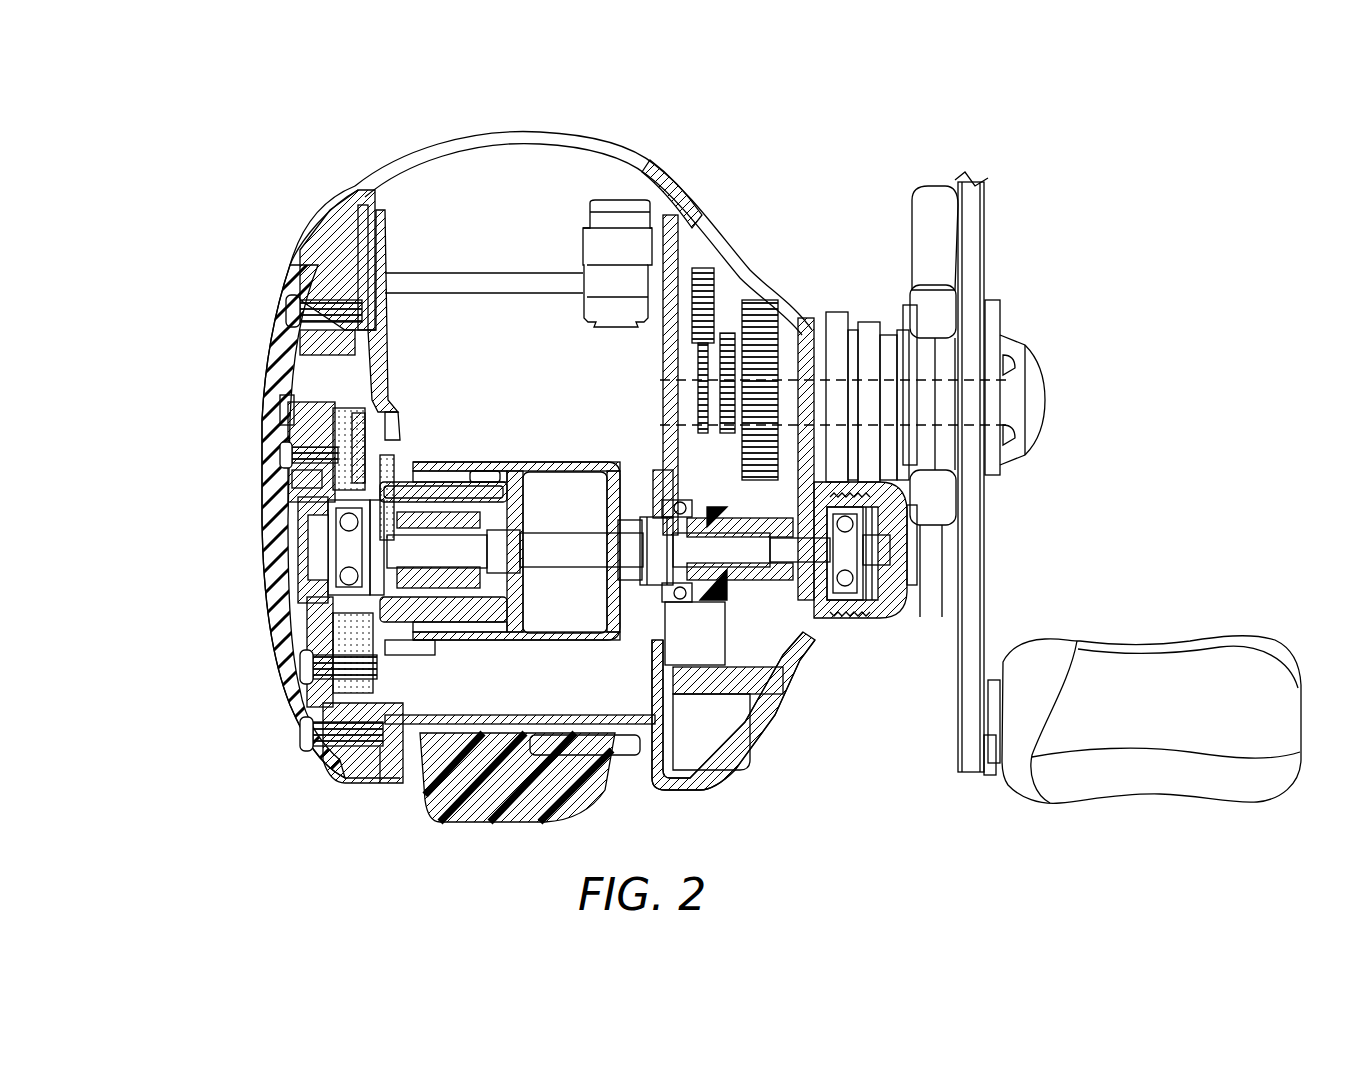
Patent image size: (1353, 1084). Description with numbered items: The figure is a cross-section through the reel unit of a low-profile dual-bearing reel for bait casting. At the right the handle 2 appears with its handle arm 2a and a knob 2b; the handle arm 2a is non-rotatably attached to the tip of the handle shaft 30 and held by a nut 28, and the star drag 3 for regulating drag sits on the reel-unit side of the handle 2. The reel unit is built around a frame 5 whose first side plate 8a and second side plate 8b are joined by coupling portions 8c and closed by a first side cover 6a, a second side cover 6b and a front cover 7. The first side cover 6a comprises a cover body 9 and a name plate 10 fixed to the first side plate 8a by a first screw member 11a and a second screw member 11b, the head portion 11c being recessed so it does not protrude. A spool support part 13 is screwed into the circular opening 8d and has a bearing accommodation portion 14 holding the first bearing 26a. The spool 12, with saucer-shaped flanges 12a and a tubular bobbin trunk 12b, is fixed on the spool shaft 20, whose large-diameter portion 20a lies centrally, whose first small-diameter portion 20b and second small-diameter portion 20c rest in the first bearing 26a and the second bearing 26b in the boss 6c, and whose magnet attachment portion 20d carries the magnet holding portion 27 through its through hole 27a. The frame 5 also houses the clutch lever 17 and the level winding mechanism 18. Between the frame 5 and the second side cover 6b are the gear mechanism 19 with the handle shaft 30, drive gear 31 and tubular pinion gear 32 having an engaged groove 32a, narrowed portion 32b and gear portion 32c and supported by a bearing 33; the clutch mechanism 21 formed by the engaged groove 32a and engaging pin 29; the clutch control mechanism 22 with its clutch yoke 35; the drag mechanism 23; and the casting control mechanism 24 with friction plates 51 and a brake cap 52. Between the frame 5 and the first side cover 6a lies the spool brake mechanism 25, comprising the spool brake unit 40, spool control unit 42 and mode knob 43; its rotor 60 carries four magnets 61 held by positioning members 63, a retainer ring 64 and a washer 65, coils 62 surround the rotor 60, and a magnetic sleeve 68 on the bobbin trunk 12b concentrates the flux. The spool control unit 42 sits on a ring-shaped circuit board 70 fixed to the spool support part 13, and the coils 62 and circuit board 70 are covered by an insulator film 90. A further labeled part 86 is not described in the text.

The handle 2 is at (1037, 283).
The handle arm 2a is at (975, 257).
The knob 2b is at (1167, 642).
The star drag 3 is at (947, 228).
The frame 5 is at (385, 258).
The first side cover 6a is at (237, 580).
The second side cover 6b is at (808, 330).
The boss 6c is at (878, 640).
The front cover 7 is at (355, 185).
The first side plate 8a is at (372, 227).
The second side plate 8b is at (672, 218).
The coupling portion 8c is at (607, 720).
The circular opening 8d is at (395, 440).
The cover body 9 is at (250, 630).
The name plate 10 is at (290, 287).
The first screw member 11a is at (287, 313).
The second screw member 11b is at (307, 737).
The head portion 11c is at (282, 327).
The spool 12 is at (540, 453).
The flange 12a is at (435, 498).
The bobbin trunk 12b is at (522, 462).
The spool support part 13 is at (250, 502).
The bearing accommodation portion 14 is at (300, 640).
The clutch lever 17 is at (568, 792).
The level winding mechanism 18 is at (612, 207).
The gear mechanism 19 is at (747, 293).
The spool shaft 20 is at (595, 535).
The large-diameter portion 20a is at (580, 615).
The first small-diameter portion 20b is at (300, 545).
The second small-diameter portion 20c is at (855, 560).
The magnet attachment portion 20d is at (548, 600).
The clutch mechanism 21 is at (630, 652).
The clutch control mechanism 22 is at (735, 640).
The drag mechanism 23 is at (780, 320).
The casting control mechanism 24 is at (907, 573).
The spool brake mechanism 25 is at (486, 478).
The first bearing 26a is at (330, 604).
The second bearing 26b is at (865, 625).
The magnet holding portion 27 is at (458, 530).
The through hole 27a is at (440, 612).
The nut 28 is at (1043, 377).
The engaging pin 29 is at (637, 533).
The handle shaft 30 is at (970, 380).
The drive gear 31 is at (757, 300).
The pinion gear 32 is at (805, 615).
The engaged groove 32a is at (650, 430).
The narrowed portion 32b is at (778, 600).
The gear portion 32c is at (800, 610).
The bearing 33 is at (720, 690).
The clutch yoke 35 is at (763, 717).
The spool brake unit 40 is at (508, 722).
The spool control unit 42 is at (340, 440).
The mode knob 43 is at (267, 413).
The friction plate 51 is at (350, 540).
The brake cap 52 is at (897, 557).
The rotor 60 is at (490, 475).
The magnet 61 is at (430, 522).
The coil 62 is at (435, 650).
The positioning member 63 is at (285, 478).
The retainer ring 64 is at (345, 695).
The washer 65 is at (350, 750).
The sleeve 68 is at (490, 640).
The circuit board 70 is at (320, 462).
The drag washer 86 is at (820, 363).
The insulator film 90 is at (367, 770).